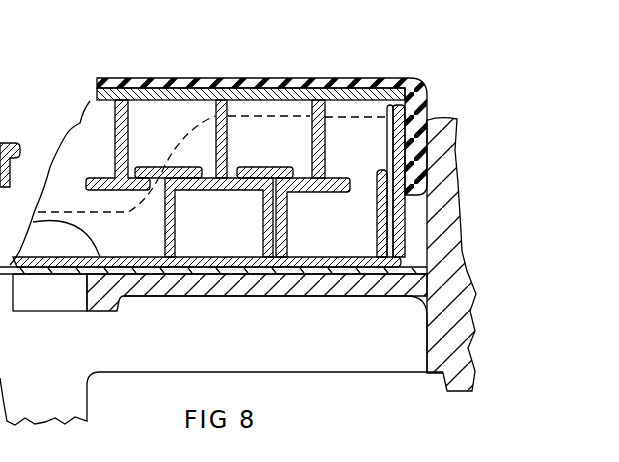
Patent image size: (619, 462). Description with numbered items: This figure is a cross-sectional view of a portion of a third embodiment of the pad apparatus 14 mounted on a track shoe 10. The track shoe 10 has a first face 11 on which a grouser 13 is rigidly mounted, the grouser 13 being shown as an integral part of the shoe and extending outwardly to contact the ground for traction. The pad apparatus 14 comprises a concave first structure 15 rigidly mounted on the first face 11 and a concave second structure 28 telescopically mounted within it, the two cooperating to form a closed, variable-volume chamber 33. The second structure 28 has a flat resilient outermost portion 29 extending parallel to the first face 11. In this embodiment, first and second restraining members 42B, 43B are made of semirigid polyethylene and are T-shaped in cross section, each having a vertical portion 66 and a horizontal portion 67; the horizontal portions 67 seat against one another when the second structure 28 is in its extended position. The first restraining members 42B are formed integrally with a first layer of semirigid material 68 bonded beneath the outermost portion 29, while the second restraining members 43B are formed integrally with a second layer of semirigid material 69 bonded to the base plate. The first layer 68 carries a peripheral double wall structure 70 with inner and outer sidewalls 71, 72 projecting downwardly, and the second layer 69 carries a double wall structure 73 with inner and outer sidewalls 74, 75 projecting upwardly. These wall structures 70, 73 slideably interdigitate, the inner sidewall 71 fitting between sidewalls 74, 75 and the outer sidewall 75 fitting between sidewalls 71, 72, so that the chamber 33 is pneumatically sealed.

The track shoe 10 is at (405, 383).
The first face 11 is at (296, 274).
The grouser 13 is at (456, 118).
The pad apparatus 14 is at (346, 65).
The first structure 15 is at (341, 284).
The second structure 28 is at (255, 68).
The outermost portion 29 is at (155, 78).
The variable-volume chamber 33 is at (73, 208).
The first restraining member 42B is at (236, 134).
The second restraining member 43B is at (184, 245).
The vertical portion 66 is at (305, 165).
The horizontal portion 67 is at (88, 178).
The first layer of semirigid material 68 is at (153, 100).
The second layer of semirigid material 69 is at (139, 257).
The double wall structure 70 is at (378, 130).
The inner sidewall 71 is at (390, 140).
The outer sidewall 72 is at (390, 156).
The double wall structure 73 is at (368, 245).
The inner sidewall 74 is at (380, 226).
The outer sidewall 75 is at (380, 198).